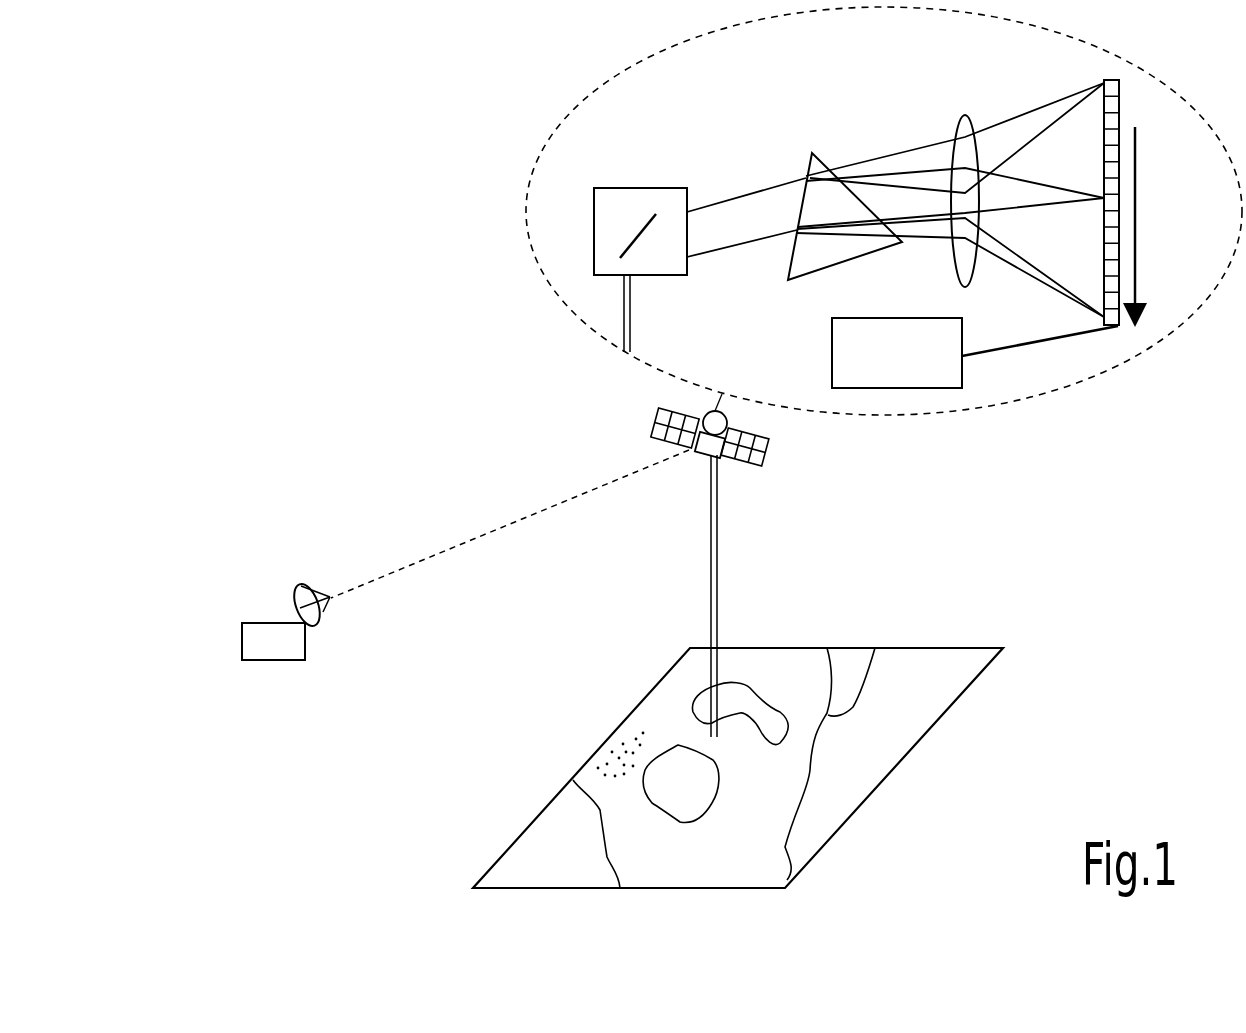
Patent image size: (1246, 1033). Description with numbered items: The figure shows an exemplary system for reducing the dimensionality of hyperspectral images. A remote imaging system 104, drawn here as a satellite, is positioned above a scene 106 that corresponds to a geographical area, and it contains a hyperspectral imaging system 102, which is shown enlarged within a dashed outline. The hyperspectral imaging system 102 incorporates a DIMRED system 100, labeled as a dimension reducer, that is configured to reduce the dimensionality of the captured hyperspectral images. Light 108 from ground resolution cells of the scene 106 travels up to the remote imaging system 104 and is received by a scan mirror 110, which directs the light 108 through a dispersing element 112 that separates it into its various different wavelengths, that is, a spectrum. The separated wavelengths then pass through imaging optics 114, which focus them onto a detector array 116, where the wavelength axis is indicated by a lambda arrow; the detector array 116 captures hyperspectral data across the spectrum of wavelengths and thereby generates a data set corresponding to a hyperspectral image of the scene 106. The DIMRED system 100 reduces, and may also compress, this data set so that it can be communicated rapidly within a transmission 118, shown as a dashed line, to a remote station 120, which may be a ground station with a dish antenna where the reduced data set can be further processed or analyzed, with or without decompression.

The DIMRED system 100 is at (832, 352).
The hyperspectral imaging system 102 is at (1062, 392).
The remote imaging system 104 is at (766, 463).
The scene 106 is at (590, 772).
The light 108 is at (632, 319).
The scan mirror 110 is at (642, 188).
The dispersing element 112 is at (806, 178).
The imaging optics 114 is at (962, 118).
The detector array 116 is at (1109, 78).
The transmission 118 is at (492, 532).
The remote station 120 is at (262, 622).